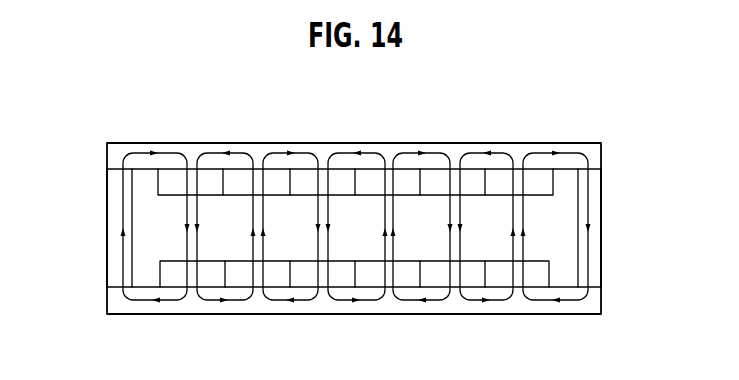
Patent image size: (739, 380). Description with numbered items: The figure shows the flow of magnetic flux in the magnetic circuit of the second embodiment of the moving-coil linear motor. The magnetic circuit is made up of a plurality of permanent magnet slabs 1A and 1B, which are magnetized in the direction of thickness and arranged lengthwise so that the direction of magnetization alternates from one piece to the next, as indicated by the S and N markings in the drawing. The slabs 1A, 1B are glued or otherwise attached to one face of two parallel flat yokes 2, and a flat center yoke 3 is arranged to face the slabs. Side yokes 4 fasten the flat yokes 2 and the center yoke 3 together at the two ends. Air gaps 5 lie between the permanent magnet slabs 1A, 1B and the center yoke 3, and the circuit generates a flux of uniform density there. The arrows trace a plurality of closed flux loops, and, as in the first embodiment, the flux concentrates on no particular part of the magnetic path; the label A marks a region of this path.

The permanent magnet slab 1A is at (190, 176).
The permanent magnet slab 1B is at (257, 177).
The flat yoke 2 is at (586, 153).
The center yoke 3 is at (592, 308).
The side yoke 4 is at (108, 230).
The air gap 5 is at (152, 238).
The magnetic flux path A is at (418, 127).